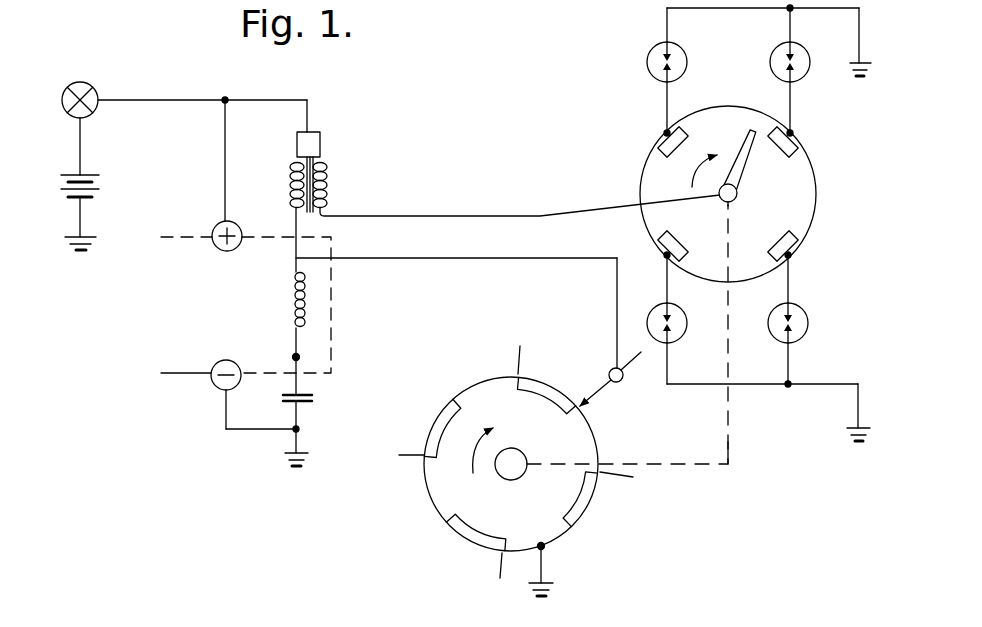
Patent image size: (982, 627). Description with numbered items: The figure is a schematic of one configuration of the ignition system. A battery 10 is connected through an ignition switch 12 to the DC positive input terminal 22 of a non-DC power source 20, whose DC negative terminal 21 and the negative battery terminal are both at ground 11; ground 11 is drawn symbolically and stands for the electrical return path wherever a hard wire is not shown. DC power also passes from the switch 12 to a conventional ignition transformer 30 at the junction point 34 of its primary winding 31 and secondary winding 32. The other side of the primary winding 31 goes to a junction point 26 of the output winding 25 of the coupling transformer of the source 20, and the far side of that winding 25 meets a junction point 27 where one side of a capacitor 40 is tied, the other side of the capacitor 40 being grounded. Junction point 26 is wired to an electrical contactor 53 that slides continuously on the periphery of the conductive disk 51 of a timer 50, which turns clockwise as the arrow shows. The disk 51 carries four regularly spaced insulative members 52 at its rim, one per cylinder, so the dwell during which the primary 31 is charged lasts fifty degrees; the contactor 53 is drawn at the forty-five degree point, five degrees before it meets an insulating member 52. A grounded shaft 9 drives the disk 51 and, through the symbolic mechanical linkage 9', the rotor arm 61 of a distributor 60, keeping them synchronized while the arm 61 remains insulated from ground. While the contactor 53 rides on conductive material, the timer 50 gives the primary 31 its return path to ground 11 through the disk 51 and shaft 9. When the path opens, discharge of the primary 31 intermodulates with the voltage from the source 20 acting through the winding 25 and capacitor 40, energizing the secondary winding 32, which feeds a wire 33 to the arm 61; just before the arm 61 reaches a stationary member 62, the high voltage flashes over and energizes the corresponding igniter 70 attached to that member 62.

The shaft 9 is at (512, 480).
The mechanical shaft linkage 9' is at (649, 339).
The battery 10 is at (98, 174).
The ground 11 is at (65, 237).
The ignition switch 12 is at (64, 89).
The non-DC power source 20 is at (160, 331).
The DC negative terminal 21 is at (213, 365).
The DC positive input terminal 22 is at (214, 230).
The output winding 25 is at (288, 311).
The junction point 26 is at (290, 260).
The junction point 27 is at (293, 358).
The ignition transformer 30 is at (309, 147).
The primary winding 31 is at (290, 175).
The secondary winding 32 is at (322, 190).
The wire 33 is at (424, 219).
The junction point 34 is at (312, 133).
The capacitor 40 is at (307, 403).
The timer 50 is at (565, 405).
The disk 51 is at (459, 485).
The insulative members 52 is at (540, 388).
The contactor 53 is at (597, 393).
The distributor 60 is at (751, 216).
The rotor arm 61 is at (742, 170).
The stationary contactor 62 is at (690, 133).
The igniters 70 is at (654, 50).